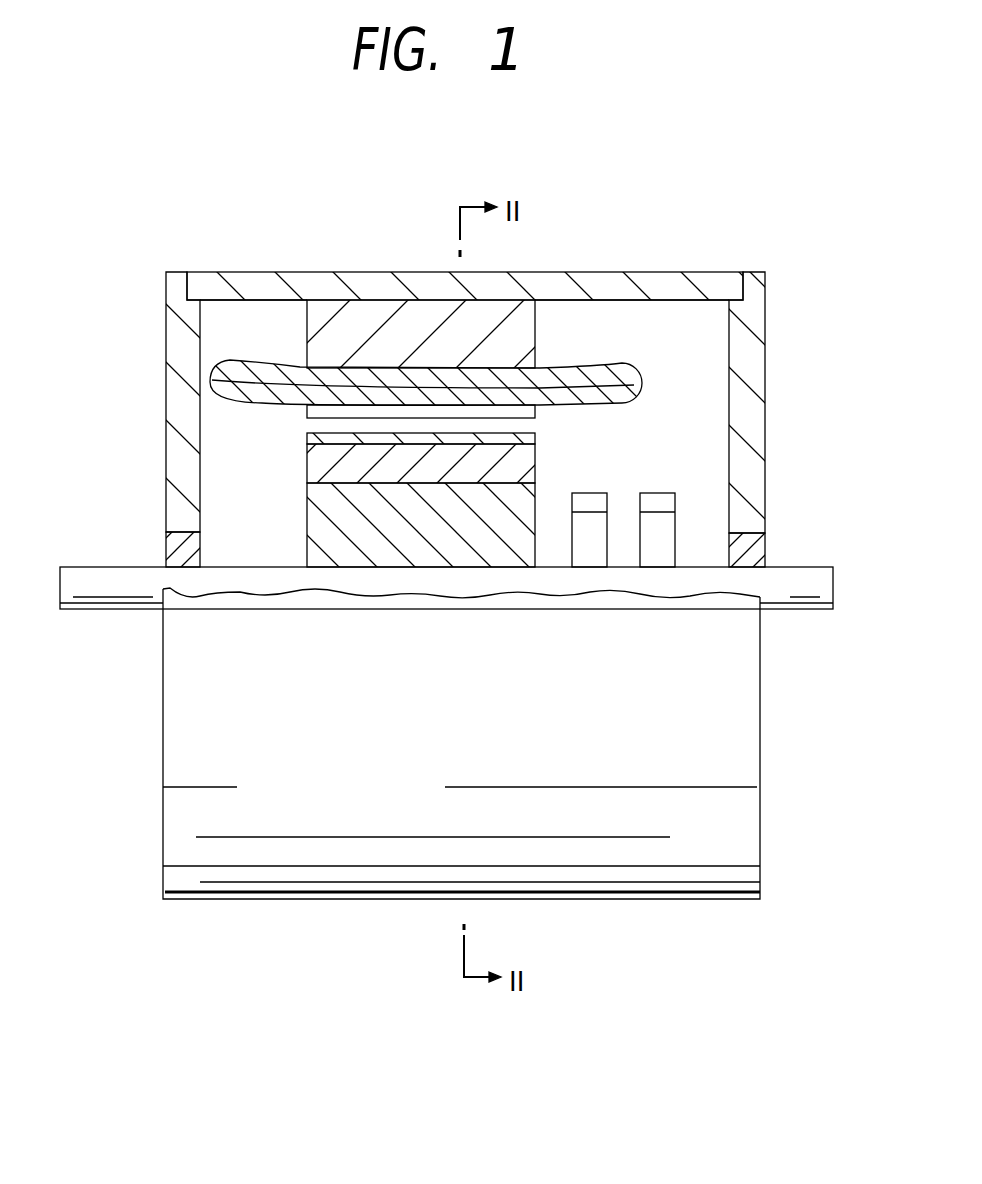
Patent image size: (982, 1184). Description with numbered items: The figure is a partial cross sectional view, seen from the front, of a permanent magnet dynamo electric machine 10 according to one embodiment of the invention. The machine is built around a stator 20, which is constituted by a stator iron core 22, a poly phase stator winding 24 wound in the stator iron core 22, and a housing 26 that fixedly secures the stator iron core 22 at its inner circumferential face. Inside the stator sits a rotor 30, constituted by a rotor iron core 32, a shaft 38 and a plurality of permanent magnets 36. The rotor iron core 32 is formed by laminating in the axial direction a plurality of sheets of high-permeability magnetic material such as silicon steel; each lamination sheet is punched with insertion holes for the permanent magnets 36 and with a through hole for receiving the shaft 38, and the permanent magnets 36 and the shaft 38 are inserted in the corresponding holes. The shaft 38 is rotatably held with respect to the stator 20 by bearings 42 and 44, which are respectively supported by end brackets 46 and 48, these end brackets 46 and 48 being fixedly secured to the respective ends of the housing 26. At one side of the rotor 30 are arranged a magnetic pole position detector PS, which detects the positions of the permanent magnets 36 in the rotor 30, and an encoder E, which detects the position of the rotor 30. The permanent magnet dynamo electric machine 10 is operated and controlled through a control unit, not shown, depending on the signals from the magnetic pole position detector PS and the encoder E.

The permanent magnet dynamo electric machine 10 is at (829, 226).
The stator 20 is at (720, 308).
The stator iron core 22 is at (368, 318).
The poly phase stator winding 24 is at (644, 384).
The housing 26 is at (612, 290).
The rotor 30 is at (308, 470).
The rotor iron core 32 is at (330, 522).
The permanent magnets 36 is at (540, 470).
The shaft 38 is at (818, 612).
The bearing 42 is at (180, 542).
The bearing 44 is at (745, 553).
The end bracket 46 is at (183, 356).
The end bracket 48 is at (752, 365).
The encoder E is at (592, 500).
The magnetic pole position detector PS is at (660, 500).